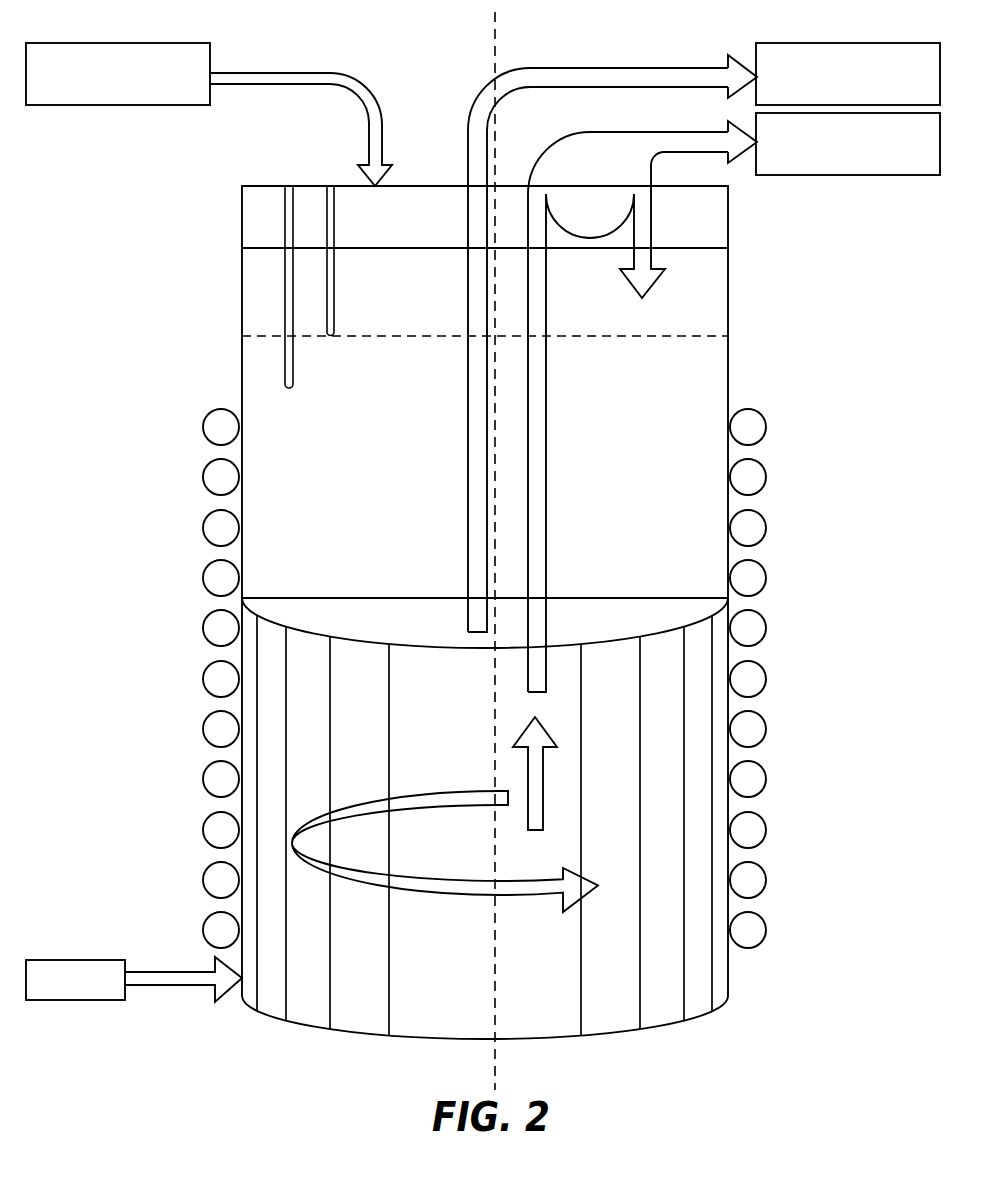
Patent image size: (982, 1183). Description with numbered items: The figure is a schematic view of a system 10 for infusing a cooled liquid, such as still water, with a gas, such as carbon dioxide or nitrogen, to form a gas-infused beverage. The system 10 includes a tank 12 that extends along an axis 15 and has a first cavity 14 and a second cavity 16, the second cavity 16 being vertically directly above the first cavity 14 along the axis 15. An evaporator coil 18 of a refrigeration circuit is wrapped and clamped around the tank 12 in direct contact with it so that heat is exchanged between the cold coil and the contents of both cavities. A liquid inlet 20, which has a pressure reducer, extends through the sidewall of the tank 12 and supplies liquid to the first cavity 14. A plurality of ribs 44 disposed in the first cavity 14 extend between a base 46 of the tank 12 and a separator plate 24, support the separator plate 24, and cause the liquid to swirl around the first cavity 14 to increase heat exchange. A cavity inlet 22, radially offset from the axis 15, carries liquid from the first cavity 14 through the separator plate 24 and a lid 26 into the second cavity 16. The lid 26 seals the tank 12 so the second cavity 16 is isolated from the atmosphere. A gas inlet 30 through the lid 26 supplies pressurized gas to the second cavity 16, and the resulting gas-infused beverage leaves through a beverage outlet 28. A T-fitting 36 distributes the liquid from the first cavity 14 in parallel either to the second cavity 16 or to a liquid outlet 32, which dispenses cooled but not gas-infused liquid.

The system 10 is at (725, 1062).
The tank 12 is at (730, 977).
The first cavity 14 is at (442, 1008).
The axis 15 is at (497, 983).
The second cavity 16 is at (693, 375).
The evaporator coil 18 is at (768, 567).
The liquid inlet 20 is at (197, 988).
The cavity inlet 22 is at (545, 547).
The separator plate 24 is at (278, 610).
The lid 26 is at (702, 215).
The beverage outlet 28 is at (486, 115).
The gas inlet 30 is at (293, 78).
The liquid outlet 32 is at (683, 140).
The T-fitting 36 is at (593, 140).
The ribs 44 is at (683, 927).
The base 46 is at (607, 1047).